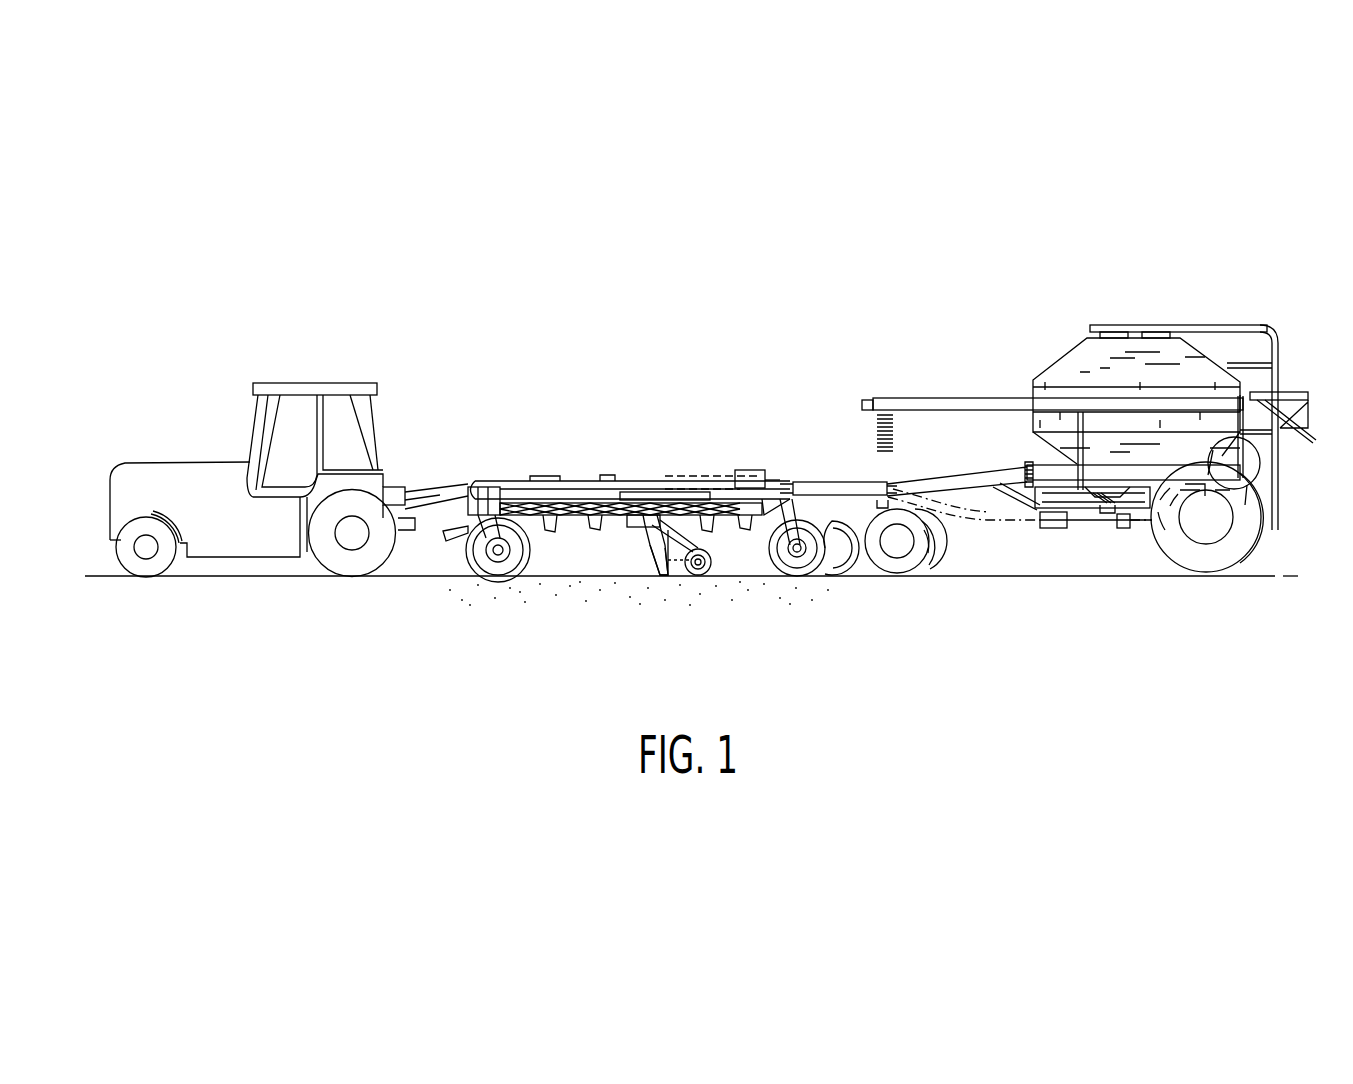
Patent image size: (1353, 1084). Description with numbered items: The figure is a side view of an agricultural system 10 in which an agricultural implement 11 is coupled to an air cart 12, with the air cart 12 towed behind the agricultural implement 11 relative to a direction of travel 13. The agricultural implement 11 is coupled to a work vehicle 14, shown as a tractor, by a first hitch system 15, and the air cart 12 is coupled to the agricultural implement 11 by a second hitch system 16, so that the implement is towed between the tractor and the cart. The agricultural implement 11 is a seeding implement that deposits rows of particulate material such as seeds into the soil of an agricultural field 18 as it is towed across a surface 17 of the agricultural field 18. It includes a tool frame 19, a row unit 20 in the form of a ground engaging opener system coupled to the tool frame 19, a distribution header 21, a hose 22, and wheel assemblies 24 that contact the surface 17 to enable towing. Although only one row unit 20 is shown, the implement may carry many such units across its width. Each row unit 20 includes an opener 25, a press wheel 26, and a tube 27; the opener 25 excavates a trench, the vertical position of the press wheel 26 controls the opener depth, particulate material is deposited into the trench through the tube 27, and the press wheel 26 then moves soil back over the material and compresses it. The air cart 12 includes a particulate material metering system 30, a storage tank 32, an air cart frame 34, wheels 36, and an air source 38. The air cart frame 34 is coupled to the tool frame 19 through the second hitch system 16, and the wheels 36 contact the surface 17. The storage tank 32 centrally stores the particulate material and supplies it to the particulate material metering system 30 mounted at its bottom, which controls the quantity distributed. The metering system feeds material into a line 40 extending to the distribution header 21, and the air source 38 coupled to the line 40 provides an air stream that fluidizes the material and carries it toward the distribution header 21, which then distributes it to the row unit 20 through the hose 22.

The agricultural system 10 is at (1176, 262).
The agricultural implement 11 is at (553, 481).
The air cart 12 is at (1062, 328).
The direction of travel 13 is at (724, 383).
The work vehicle 14 is at (308, 372).
The first hitch system 15 is at (413, 490).
The second hitch system 16 is at (786, 486).
The surface 17 is at (1058, 578).
The agricultural field 18 is at (905, 683).
The tool frame 19 is at (650, 490).
The row unit 20 is at (660, 578).
The distribution header 21 is at (755, 471).
The hose 22 is at (707, 476).
The wheel assemblies 24 is at (490, 580).
The opener 25 is at (640, 555).
The press wheel 26 is at (706, 562).
The tube 27 is at (689, 578).
The particulate material metering system 30 is at (940, 548).
The storage tank 32 is at (1090, 360).
The air cart frame 34 is at (946, 482).
The wheels 36 is at (1202, 573).
The air source 38 is at (1252, 470).
The line 40 is at (990, 528).